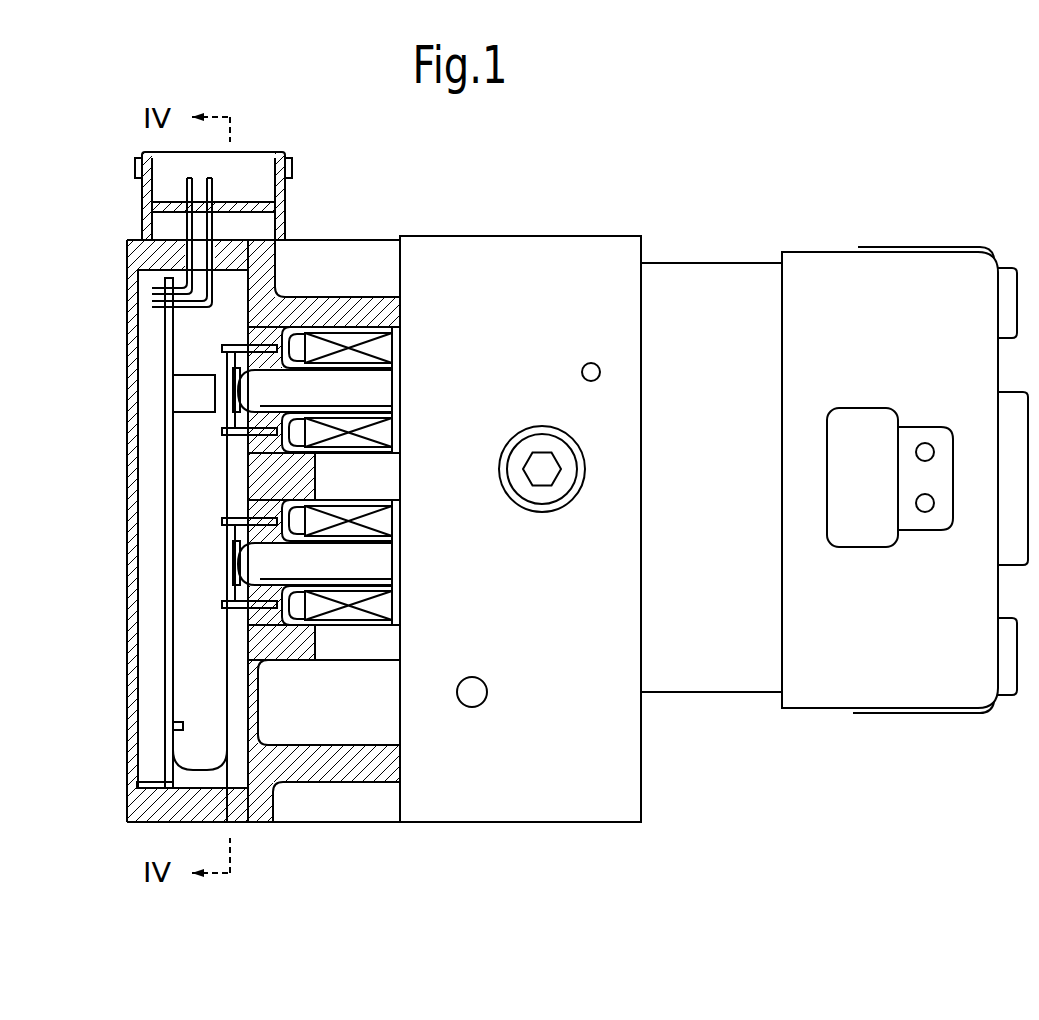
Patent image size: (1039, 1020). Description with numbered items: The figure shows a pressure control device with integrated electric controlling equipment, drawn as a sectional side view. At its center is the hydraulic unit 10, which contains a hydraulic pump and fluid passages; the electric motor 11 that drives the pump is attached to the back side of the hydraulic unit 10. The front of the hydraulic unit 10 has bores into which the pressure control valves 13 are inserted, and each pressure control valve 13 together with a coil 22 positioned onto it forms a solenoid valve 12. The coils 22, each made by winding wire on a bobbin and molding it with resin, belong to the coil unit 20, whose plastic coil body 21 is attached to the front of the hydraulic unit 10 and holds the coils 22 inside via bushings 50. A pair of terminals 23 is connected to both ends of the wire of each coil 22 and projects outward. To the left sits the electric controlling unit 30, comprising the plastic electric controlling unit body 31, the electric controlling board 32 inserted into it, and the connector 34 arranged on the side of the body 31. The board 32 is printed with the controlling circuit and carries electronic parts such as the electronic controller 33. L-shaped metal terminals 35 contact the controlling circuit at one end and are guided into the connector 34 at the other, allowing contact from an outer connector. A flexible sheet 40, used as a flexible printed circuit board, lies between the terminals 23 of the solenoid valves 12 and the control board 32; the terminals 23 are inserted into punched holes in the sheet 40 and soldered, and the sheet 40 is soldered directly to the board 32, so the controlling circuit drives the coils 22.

The hydraulic unit 10 is at (545, 826).
The electric motor 11 is at (738, 678).
The solenoid valve 12 is at (375, 482).
The pressure control valve 13 is at (380, 556).
The coil unit 20 is at (328, 790).
The coil body 21 is at (258, 697).
The coil 22 is at (380, 640).
The terminal 23 is at (240, 343).
The electric controlling unit 30 is at (146, 564).
The electric controlling unit body 31 is at (127, 633).
The electric controlling board 32 is at (163, 560).
The electronic controller 33 is at (187, 393).
The connector 34 is at (287, 193).
The terminal 35 is at (213, 190).
The flexible sheet 40 is at (223, 672).
The bushing 50 is at (318, 638).